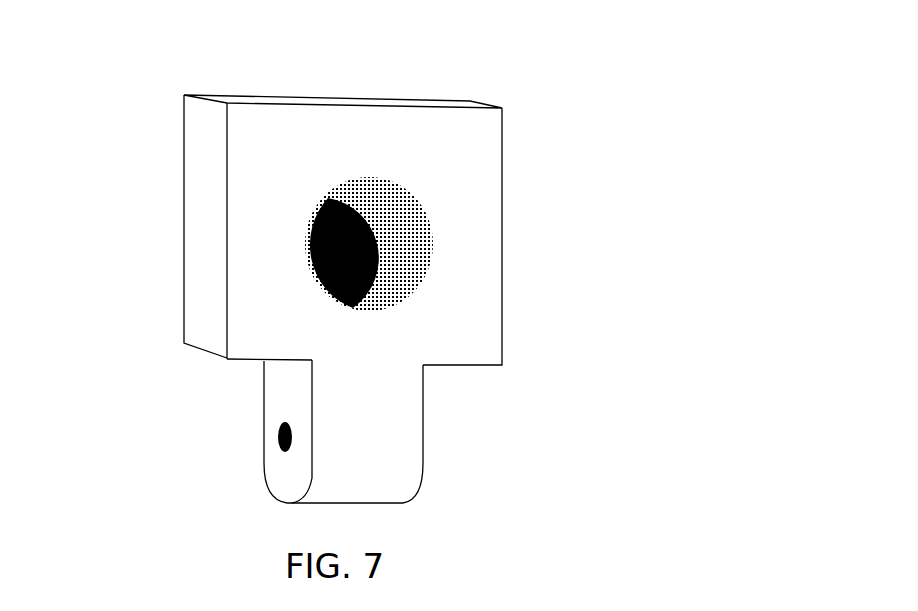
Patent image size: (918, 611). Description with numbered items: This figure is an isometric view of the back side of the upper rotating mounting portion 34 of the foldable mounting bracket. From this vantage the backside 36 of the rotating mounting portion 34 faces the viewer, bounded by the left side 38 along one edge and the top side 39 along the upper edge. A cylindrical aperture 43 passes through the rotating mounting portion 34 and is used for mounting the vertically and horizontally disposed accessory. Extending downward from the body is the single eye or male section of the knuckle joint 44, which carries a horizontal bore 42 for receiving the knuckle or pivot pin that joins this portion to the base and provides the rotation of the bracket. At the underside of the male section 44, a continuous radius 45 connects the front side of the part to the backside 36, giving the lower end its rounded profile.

The rotating mounting portion 34 is at (467, 124).
The backside 36 is at (262, 131).
The left side 38 is at (197, 198).
The top side 39 is at (382, 98).
The horizontal bore 42 is at (272, 443).
The cylindrical aperture 43 is at (397, 223).
The single eye or male section of the knuckle joint 44 is at (283, 374).
The continuous radius 45 is at (382, 484).